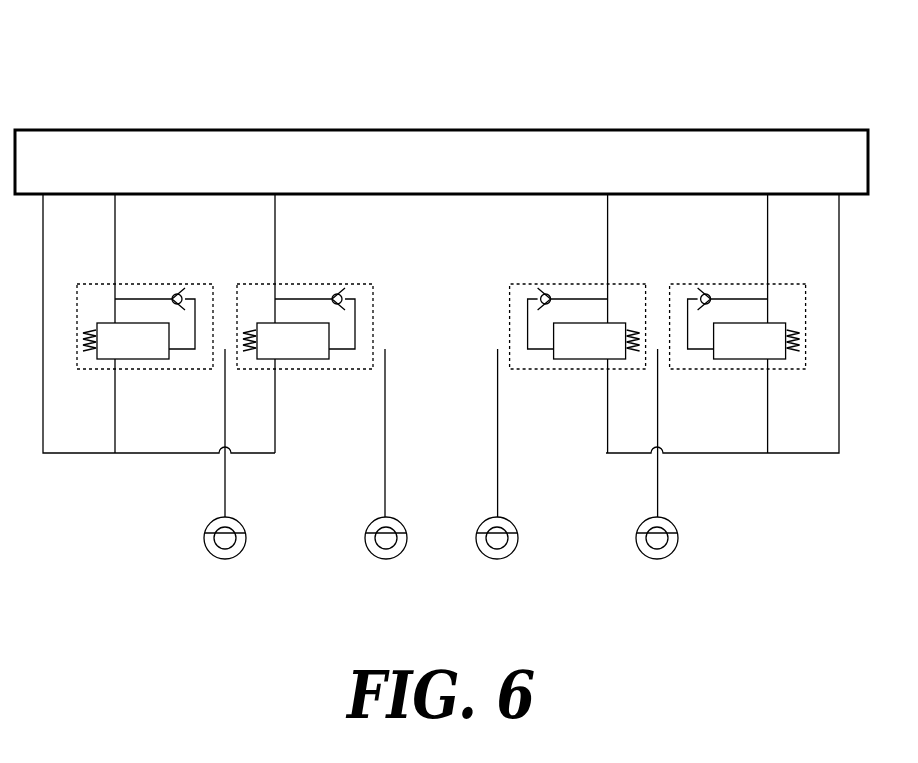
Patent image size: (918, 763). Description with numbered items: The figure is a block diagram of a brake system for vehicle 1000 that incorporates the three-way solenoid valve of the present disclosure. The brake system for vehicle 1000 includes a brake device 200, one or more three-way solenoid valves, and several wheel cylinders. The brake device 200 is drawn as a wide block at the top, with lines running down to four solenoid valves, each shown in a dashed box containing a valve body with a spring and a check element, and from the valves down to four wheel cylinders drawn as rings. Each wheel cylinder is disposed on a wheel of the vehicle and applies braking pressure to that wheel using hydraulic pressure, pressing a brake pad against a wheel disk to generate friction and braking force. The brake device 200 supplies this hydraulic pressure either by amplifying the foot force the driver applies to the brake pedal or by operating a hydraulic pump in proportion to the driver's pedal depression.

The brake system for vehicle 1000 is at (90, 42).
The brake device 200 is at (545, 129).